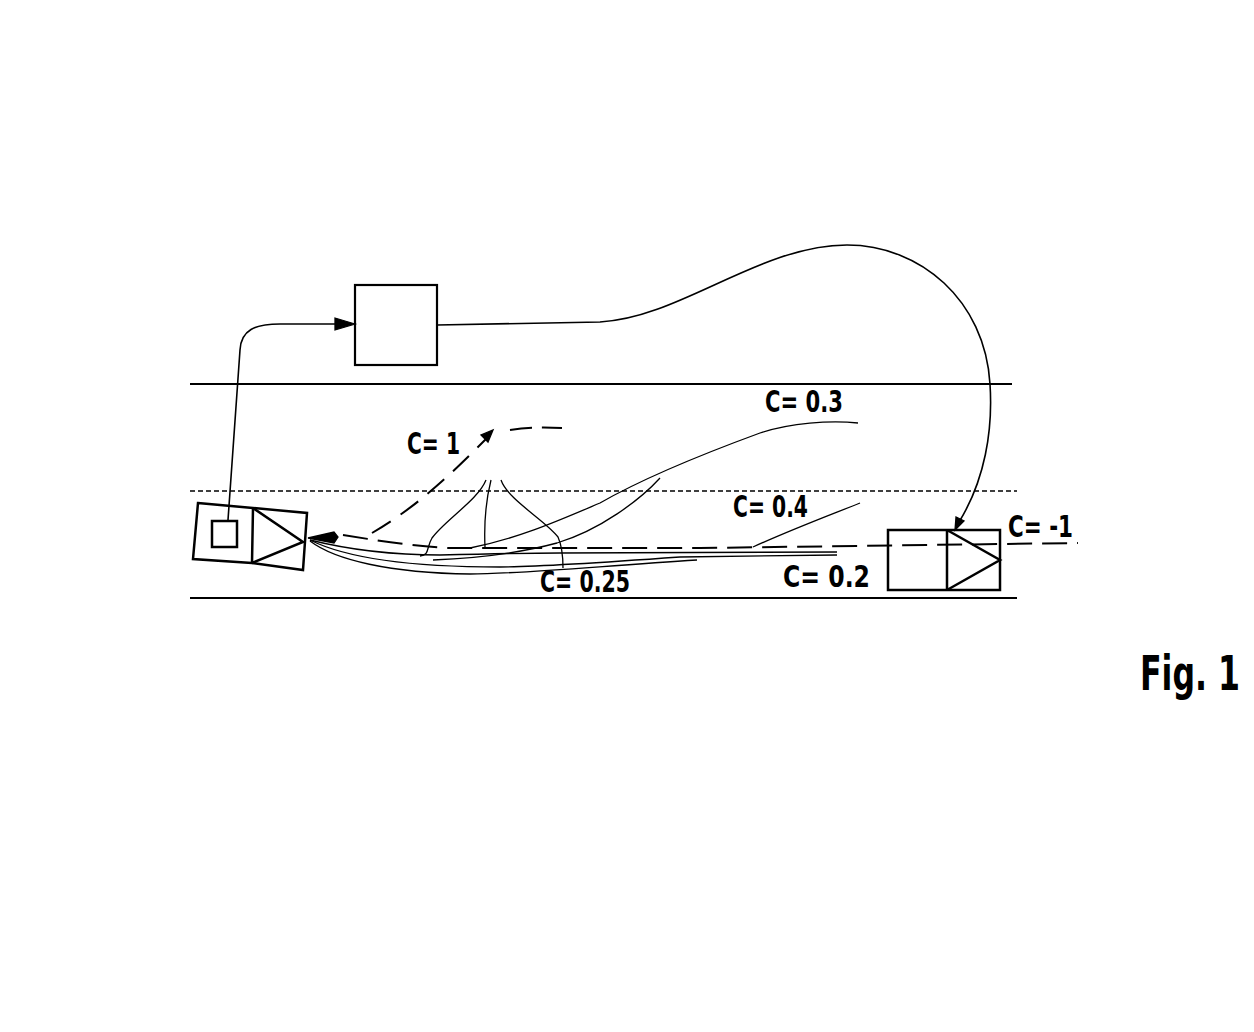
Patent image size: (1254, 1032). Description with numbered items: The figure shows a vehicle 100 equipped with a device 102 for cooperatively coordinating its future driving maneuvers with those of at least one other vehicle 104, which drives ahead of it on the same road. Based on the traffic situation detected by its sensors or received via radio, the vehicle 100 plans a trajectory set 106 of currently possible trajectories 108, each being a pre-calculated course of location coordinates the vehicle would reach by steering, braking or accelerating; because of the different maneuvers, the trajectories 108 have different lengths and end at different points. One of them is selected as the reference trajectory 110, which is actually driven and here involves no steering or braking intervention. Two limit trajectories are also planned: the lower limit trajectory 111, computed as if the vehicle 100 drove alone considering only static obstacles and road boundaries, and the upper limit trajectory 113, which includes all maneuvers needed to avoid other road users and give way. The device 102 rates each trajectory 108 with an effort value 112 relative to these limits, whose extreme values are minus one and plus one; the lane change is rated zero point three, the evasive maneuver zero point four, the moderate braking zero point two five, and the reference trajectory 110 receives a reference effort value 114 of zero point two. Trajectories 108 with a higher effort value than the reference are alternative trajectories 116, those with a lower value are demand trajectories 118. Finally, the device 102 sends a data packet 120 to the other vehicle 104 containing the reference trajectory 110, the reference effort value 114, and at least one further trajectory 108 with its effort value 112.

The vehicle 100 is at (195, 547).
The device 102 is at (197, 533).
The other vehicle 104 is at (1000, 573).
The trajectory set 106 is at (490, 430).
The trajectories 108 is at (573, 511).
The reference trajectory 110 is at (760, 553).
The lower limit trajectory 111 is at (927, 540).
The effort value 112 is at (838, 372).
The upper limit trajectory 113 is at (418, 500).
The reference effort value 114 is at (861, 611).
The alternative trajectories 116 is at (832, 517).
The demand trajectories 118 is at (652, 562).
The data packet 120 is at (418, 345).